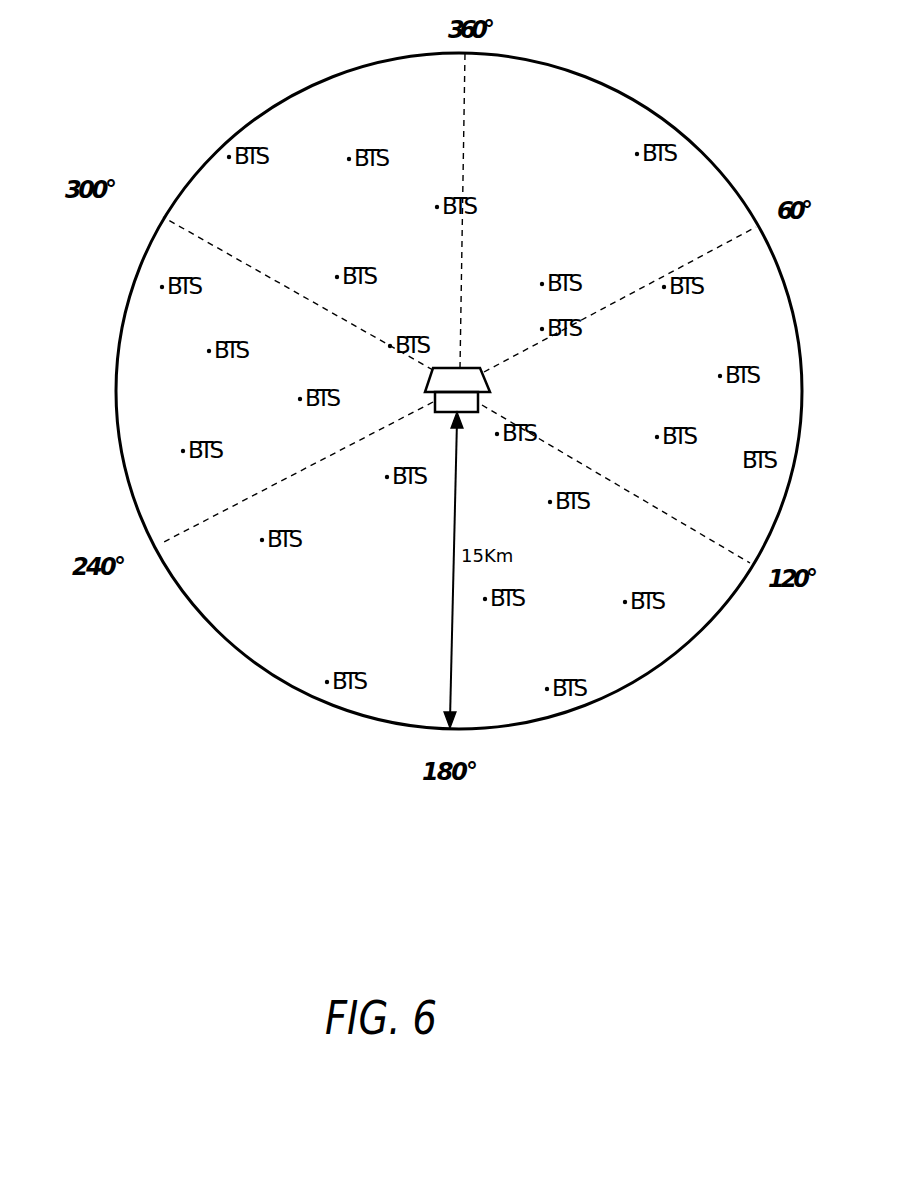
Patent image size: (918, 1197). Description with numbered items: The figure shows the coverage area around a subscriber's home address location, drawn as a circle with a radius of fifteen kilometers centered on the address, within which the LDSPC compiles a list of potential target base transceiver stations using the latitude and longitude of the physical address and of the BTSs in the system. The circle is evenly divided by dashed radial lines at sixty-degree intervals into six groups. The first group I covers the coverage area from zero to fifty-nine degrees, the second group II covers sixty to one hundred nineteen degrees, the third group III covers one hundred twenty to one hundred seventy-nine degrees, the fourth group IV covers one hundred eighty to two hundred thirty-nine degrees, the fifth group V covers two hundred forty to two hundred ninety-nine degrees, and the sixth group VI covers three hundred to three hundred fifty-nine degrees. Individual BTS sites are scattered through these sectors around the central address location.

The first group I is at (670, 122).
The second group II is at (803, 387).
The third group III is at (668, 731).
The fourth group IV is at (248, 703).
The fifth group V is at (24, 359).
The sixth group VI is at (246, 41).